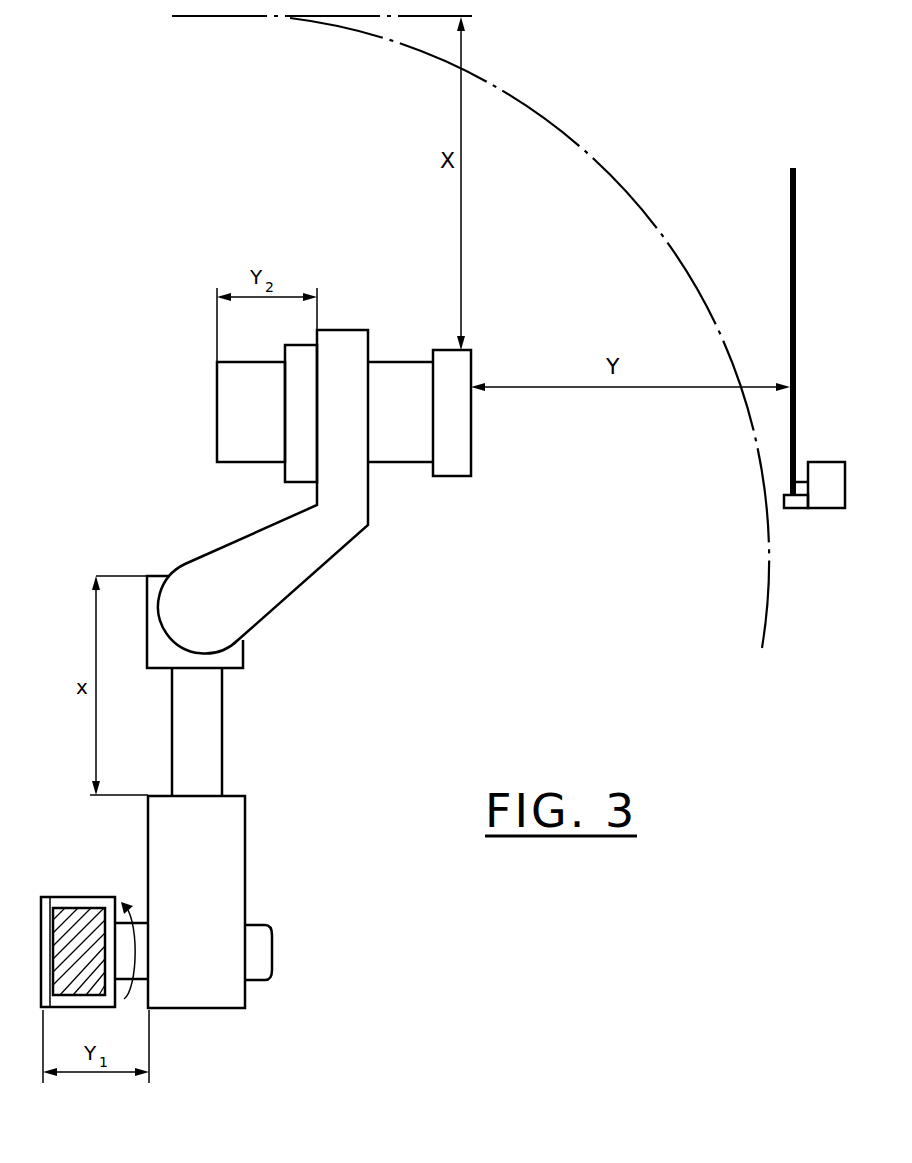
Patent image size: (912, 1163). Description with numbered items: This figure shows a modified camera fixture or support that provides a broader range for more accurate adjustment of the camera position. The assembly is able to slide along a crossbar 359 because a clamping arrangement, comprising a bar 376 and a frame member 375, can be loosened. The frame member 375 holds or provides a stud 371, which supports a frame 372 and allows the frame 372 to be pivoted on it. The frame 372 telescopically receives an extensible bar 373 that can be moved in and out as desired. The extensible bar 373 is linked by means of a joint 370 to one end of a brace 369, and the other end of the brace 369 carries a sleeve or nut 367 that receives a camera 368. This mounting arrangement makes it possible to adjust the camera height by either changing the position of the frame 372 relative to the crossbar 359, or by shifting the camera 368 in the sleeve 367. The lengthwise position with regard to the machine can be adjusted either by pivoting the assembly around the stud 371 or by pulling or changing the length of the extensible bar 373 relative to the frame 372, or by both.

The crossbar 359 is at (60, 1008).
The sleeve or nut 367 is at (302, 360).
The camera 368 is at (232, 385).
The brace 369 is at (240, 567).
The joint 370 is at (156, 590).
The stud 371 is at (268, 945).
The frame 372 is at (228, 870).
The extensible bar 373 is at (210, 750).
The frame member 375 is at (90, 900).
The bar 376 is at (41, 906).